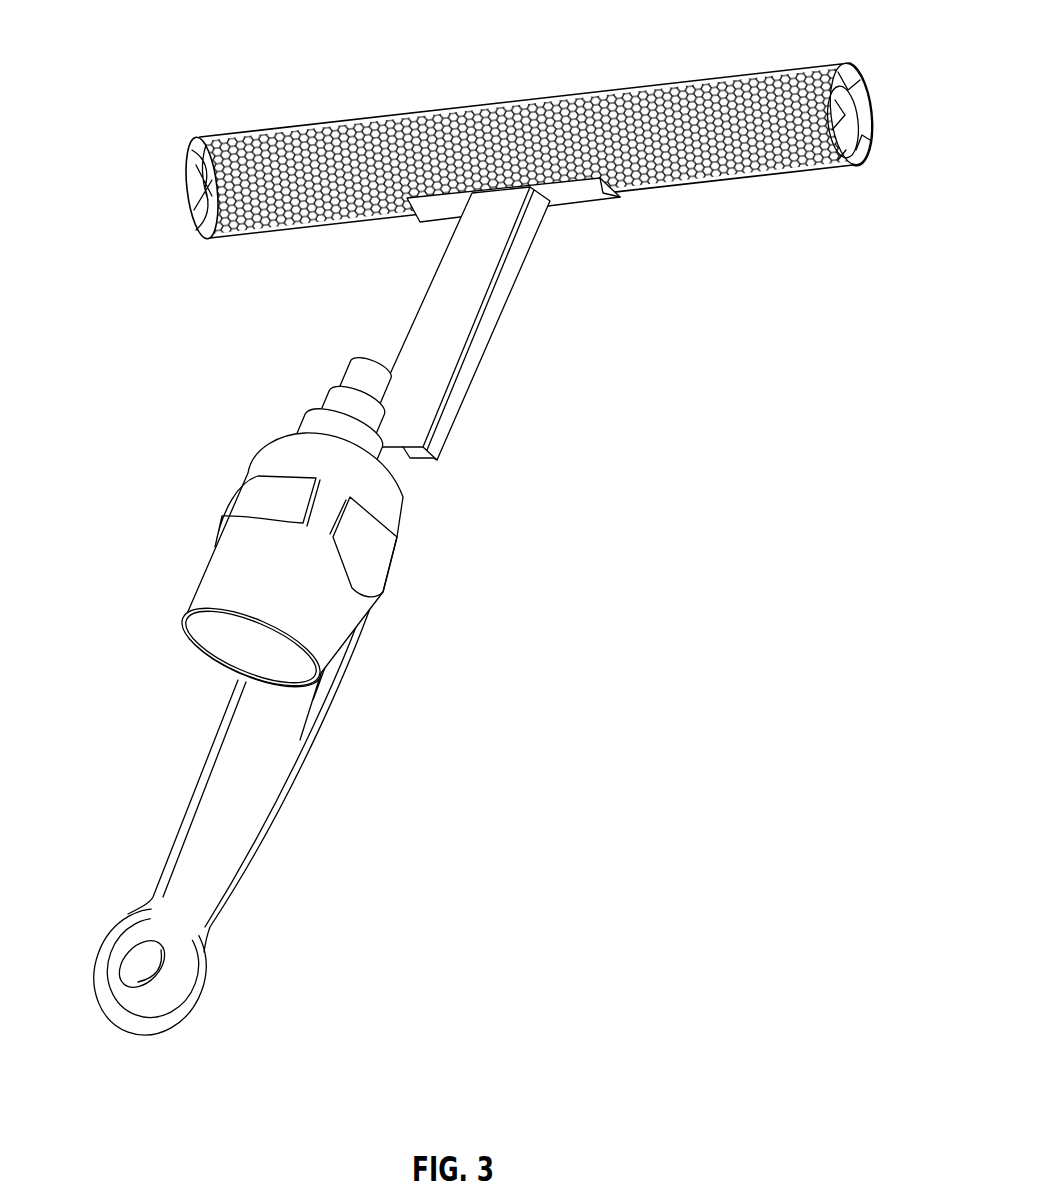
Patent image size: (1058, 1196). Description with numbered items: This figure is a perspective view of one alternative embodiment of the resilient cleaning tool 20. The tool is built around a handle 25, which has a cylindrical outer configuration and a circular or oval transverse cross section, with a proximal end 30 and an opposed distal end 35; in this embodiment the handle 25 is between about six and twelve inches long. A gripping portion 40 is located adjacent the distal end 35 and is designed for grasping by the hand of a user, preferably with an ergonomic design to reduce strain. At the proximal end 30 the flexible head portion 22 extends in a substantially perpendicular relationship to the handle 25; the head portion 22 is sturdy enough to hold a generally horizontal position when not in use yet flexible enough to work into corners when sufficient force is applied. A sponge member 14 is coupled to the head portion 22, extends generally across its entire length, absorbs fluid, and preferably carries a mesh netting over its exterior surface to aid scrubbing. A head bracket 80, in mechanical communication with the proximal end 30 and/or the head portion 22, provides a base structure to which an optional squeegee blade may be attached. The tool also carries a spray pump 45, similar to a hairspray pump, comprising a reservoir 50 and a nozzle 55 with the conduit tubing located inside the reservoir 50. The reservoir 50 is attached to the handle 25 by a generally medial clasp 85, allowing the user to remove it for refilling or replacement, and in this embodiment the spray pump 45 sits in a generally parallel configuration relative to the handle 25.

The resilient cleaning tool 20 is at (737, 51).
The head portion 22 is at (261, 130).
The sponge member 14 is at (188, 181).
The head bracket 80 is at (590, 196).
The proximal end 30 is at (500, 303).
The nozzle 55 is at (360, 362).
The medial clasp 85 is at (220, 514).
The reservoir 50 is at (220, 580).
The spray pump 45 is at (335, 640).
The gripping portion 40 is at (241, 803).
The handle 25 is at (195, 778).
The distal end 35 is at (255, 860).